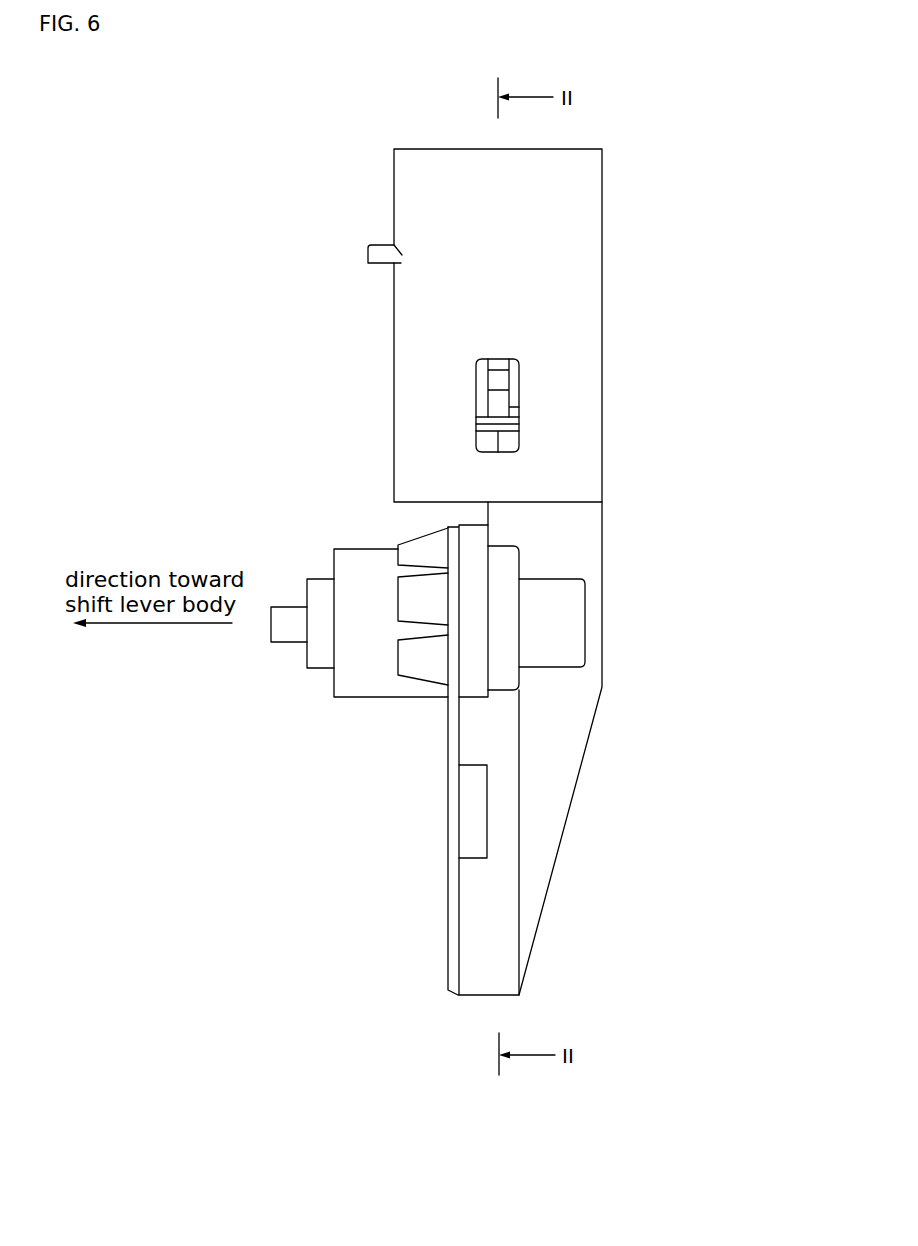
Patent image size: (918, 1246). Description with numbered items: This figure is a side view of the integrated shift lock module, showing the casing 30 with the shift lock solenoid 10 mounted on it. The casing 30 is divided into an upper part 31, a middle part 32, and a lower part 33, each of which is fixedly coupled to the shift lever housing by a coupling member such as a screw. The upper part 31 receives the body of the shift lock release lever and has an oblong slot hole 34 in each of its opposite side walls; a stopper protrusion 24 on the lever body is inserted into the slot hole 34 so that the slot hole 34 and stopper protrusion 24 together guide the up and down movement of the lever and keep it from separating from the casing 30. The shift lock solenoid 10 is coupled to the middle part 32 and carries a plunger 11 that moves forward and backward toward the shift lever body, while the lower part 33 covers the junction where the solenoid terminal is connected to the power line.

The shift lock solenoid 10 is at (357, 672).
The plunger 11 is at (290, 620).
The stopper protrusion 24 is at (495, 382).
The casing 30 is at (563, 572).
The upper part 31 is at (583, 303).
The middle part 32 is at (555, 622).
The lower part 33 is at (502, 753).
The slot hole 34 is at (505, 447).